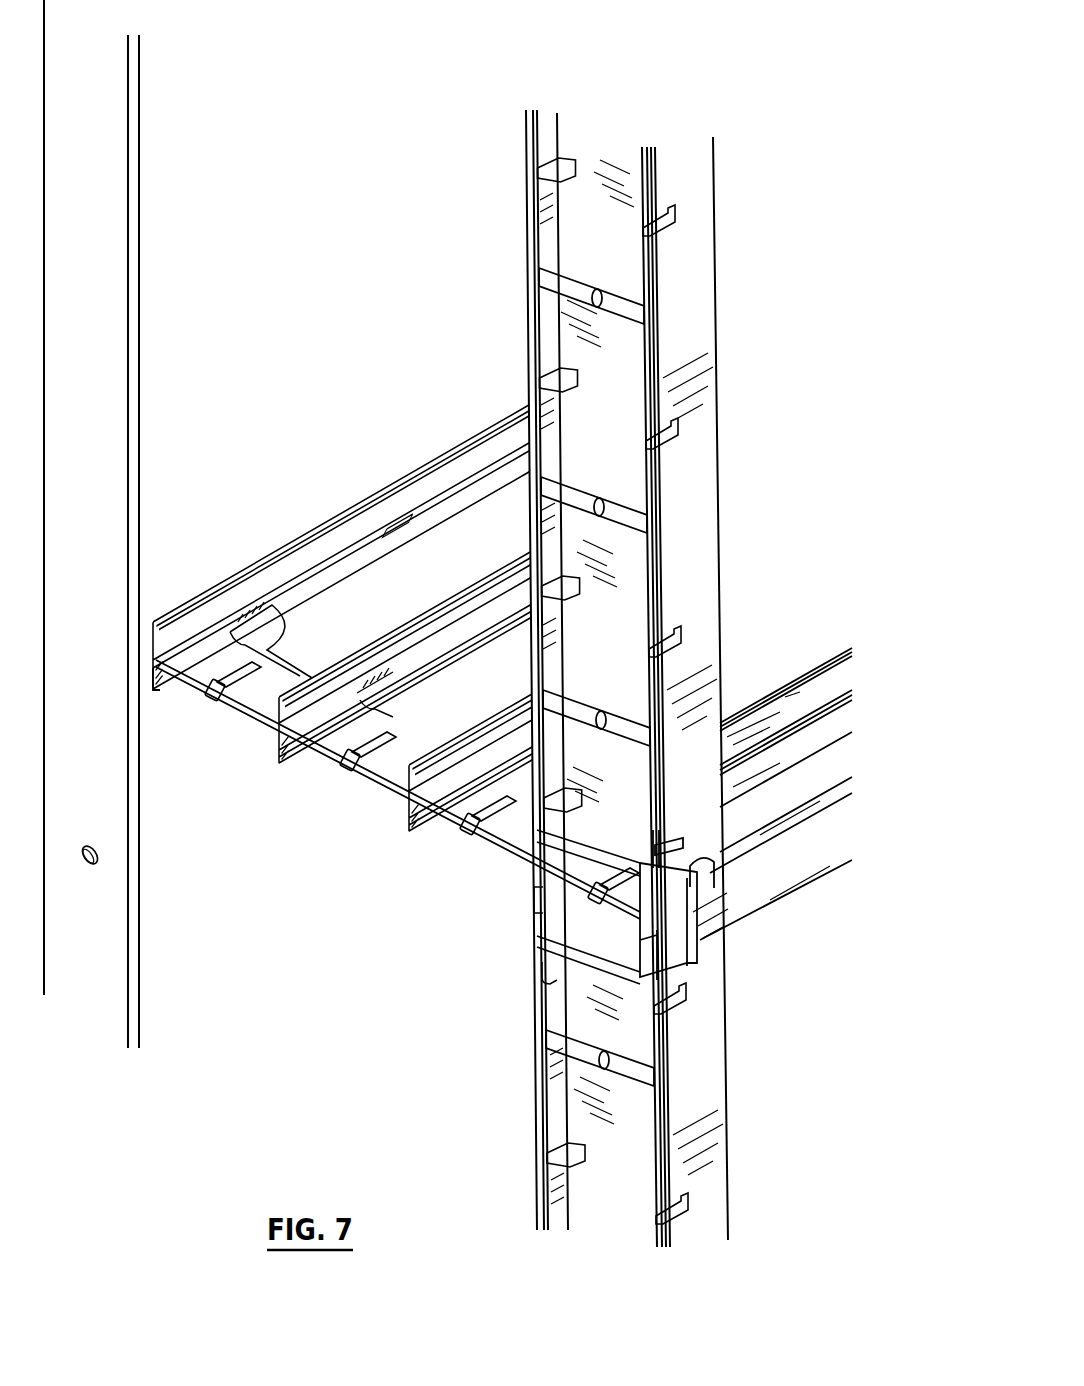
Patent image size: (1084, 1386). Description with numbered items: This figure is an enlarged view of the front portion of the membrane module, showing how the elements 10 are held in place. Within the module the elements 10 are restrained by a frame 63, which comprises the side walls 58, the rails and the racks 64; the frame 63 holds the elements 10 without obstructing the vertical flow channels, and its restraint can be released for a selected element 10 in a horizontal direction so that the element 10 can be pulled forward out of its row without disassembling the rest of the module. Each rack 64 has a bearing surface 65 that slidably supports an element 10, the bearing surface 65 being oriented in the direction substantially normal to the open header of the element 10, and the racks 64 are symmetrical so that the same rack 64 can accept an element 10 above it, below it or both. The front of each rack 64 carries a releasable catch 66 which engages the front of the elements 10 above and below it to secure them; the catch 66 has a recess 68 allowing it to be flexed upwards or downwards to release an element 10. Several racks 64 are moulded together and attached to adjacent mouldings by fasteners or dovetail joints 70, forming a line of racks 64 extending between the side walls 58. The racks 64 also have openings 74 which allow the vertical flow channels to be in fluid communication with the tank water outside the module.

The element 10 is at (703, 493).
The side wall 58 is at (252, 944).
The frame 63 is at (396, 691).
The rack 64 is at (341, 547).
The bearing surface 65 is at (292, 627).
The releasable catch 66 is at (210, 692).
The recess 68 is at (465, 815).
The dovetail joint 70 is at (173, 613).
The opening 74 is at (375, 497).